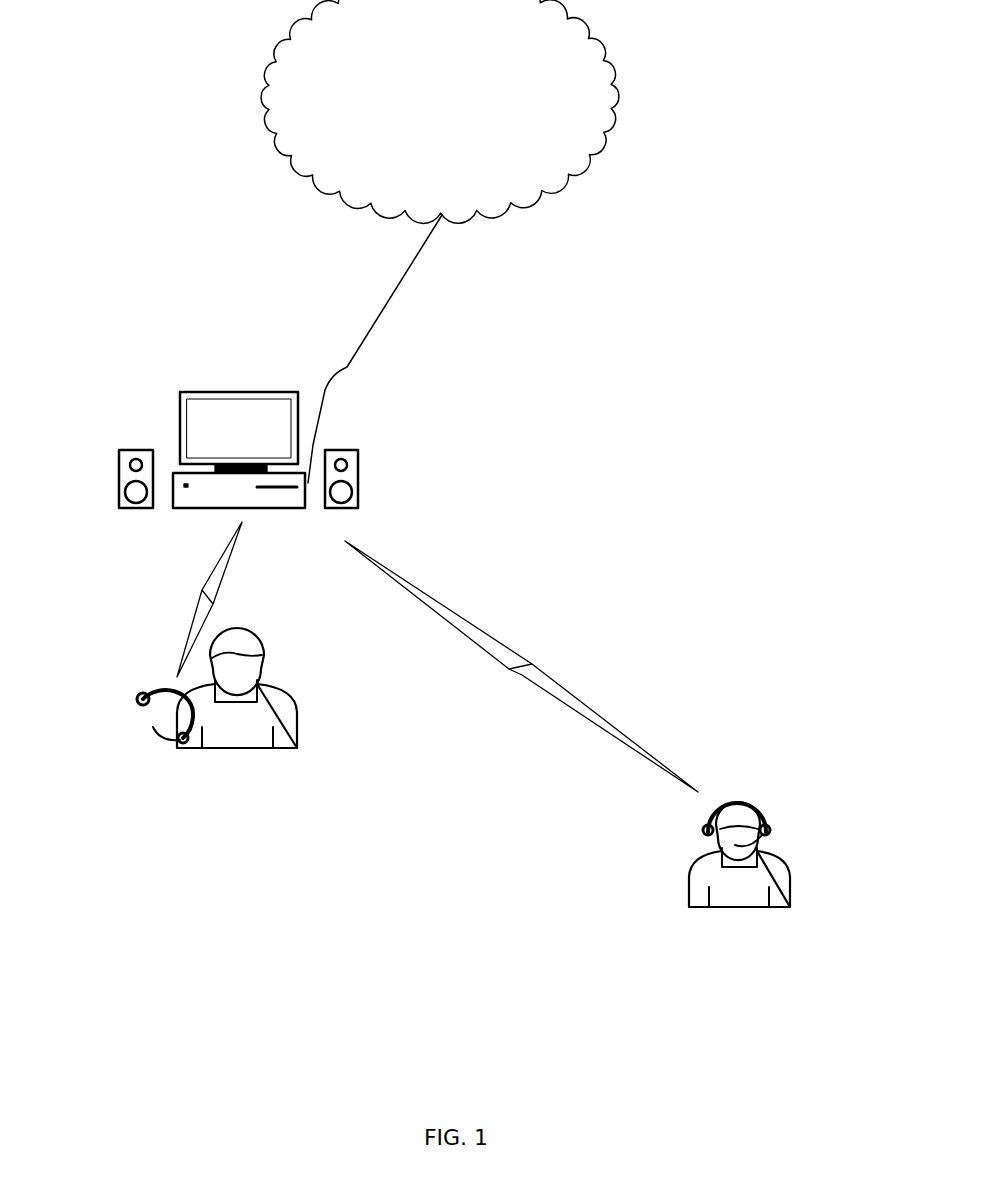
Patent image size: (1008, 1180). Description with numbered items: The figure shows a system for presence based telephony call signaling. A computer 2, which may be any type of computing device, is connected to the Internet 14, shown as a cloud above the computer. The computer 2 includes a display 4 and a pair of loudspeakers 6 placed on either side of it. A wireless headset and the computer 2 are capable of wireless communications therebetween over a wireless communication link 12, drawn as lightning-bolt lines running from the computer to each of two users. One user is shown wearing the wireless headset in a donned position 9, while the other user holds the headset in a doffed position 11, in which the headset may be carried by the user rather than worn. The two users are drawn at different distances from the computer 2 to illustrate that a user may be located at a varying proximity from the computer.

The computer 2 is at (152, 325).
The display 4 is at (250, 397).
The loudspeakers 6 is at (118, 465).
The donned position 9 is at (773, 783).
The doffed position 11 is at (157, 775).
The wireless communication link 12 is at (430, 657).
The Internet 14 is at (440, 111).